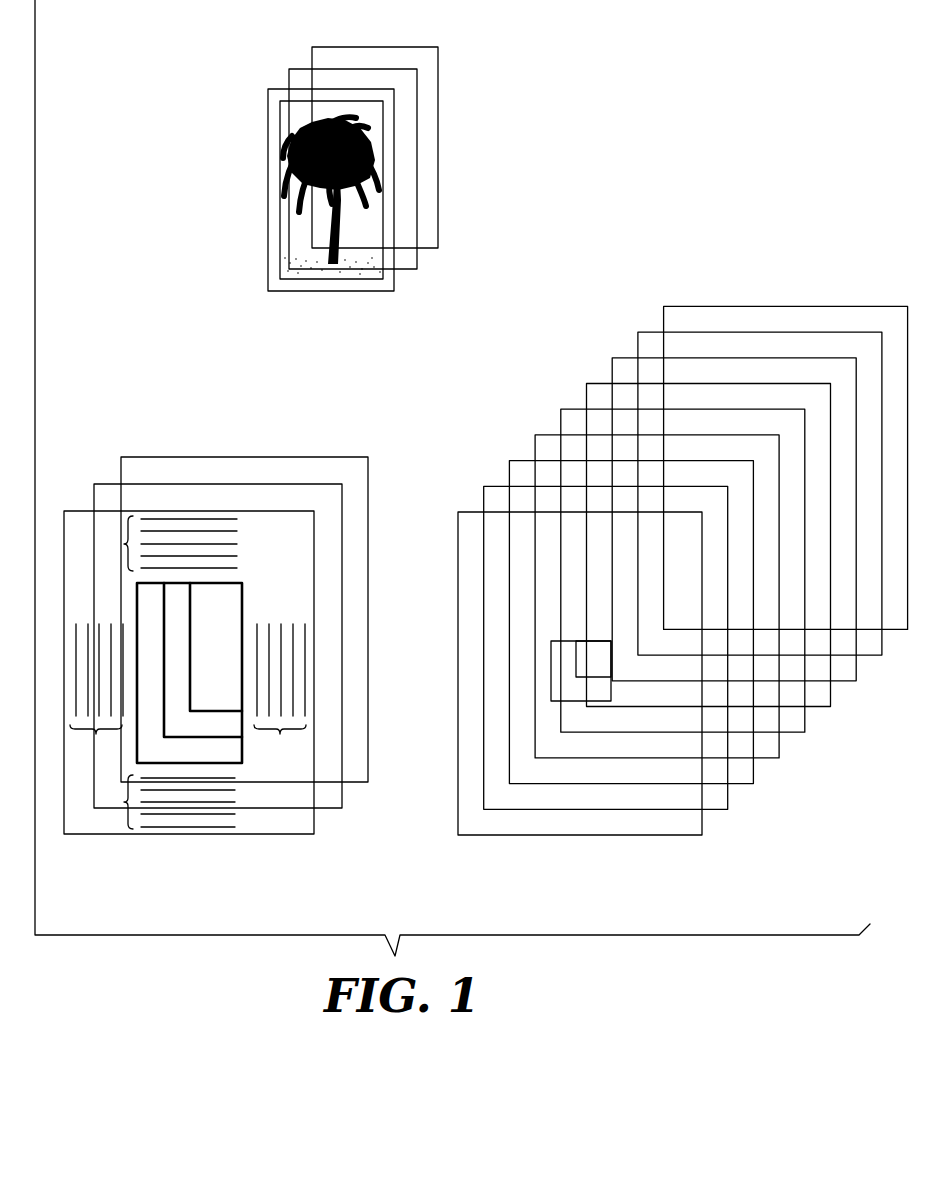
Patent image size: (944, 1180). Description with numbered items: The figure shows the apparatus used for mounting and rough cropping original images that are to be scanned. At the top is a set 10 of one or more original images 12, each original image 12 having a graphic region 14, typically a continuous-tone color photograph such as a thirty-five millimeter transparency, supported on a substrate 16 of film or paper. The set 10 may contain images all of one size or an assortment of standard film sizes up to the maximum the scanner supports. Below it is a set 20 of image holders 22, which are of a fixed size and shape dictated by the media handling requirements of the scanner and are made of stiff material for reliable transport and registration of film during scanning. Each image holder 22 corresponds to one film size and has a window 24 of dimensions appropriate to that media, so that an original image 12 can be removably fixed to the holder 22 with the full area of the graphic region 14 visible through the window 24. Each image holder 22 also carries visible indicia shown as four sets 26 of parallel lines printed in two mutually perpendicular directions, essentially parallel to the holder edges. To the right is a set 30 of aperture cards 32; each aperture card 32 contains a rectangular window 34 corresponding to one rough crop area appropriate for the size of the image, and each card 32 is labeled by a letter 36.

The set of original images 10 is at (373, 179).
The original image 12 is at (391, 170).
The graphic region 14 is at (290, 225).
The substrate 16 is at (344, 284).
The set of image holders 20 is at (240, 657).
The image holder 22 is at (306, 589).
The window 24 is at (241, 754).
The sets of parallel lines 26 is at (188, 672).
The set of aperture cards 30 is at (670, 587).
The aperture card 32 is at (897, 615).
The rectangular window 34 is at (611, 696).
The letter 36 is at (599, 803).